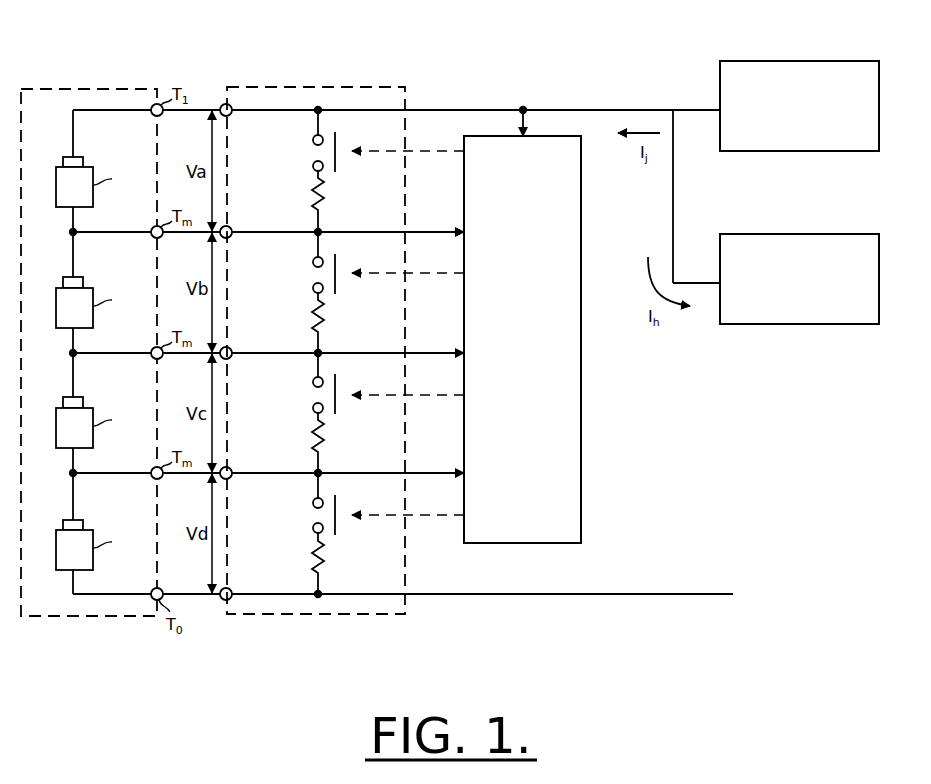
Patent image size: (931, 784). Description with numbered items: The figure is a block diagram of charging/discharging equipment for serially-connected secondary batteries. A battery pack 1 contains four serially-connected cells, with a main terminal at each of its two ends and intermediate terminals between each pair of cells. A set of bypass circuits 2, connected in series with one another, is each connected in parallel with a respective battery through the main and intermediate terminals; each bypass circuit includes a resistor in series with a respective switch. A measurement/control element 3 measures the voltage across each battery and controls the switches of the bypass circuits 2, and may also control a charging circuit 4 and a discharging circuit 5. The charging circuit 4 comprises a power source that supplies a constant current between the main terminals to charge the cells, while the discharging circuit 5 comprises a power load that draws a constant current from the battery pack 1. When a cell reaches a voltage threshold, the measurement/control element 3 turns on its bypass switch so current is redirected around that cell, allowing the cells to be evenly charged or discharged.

The battery pack 1 is at (92, 89).
The bypass circuits 2 is at (341, 137).
The measurement/control element 3 is at (581, 260).
The charging circuit 4 is at (797, 61).
The discharging circuit 5 is at (801, 234).